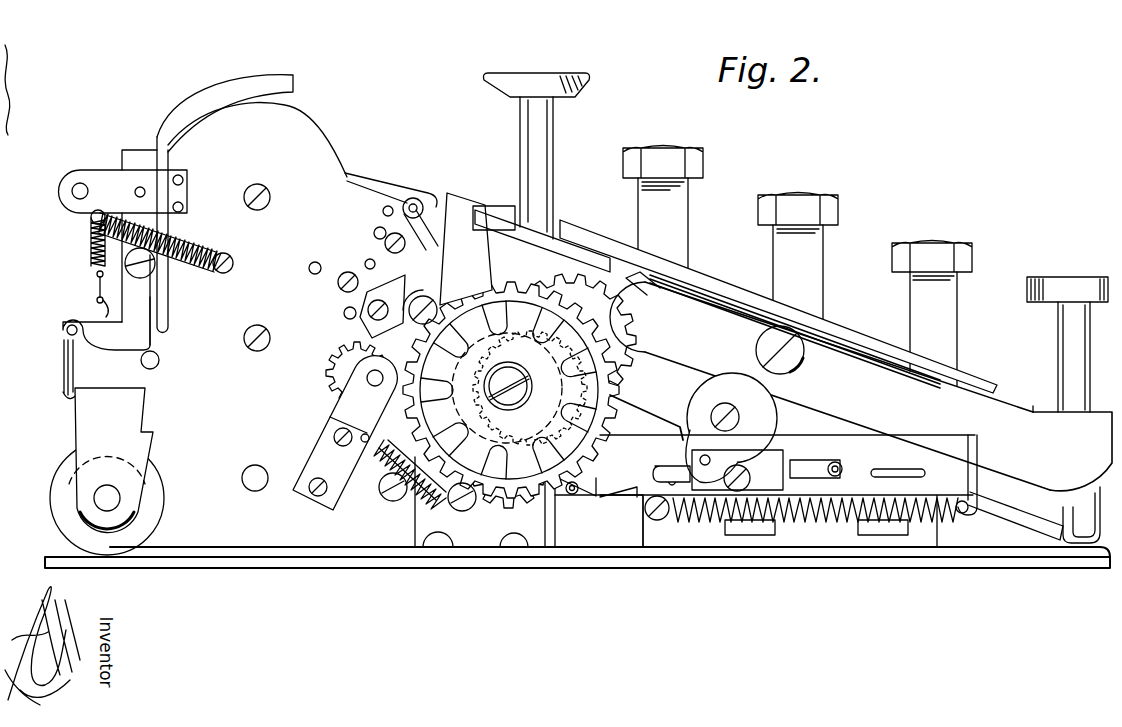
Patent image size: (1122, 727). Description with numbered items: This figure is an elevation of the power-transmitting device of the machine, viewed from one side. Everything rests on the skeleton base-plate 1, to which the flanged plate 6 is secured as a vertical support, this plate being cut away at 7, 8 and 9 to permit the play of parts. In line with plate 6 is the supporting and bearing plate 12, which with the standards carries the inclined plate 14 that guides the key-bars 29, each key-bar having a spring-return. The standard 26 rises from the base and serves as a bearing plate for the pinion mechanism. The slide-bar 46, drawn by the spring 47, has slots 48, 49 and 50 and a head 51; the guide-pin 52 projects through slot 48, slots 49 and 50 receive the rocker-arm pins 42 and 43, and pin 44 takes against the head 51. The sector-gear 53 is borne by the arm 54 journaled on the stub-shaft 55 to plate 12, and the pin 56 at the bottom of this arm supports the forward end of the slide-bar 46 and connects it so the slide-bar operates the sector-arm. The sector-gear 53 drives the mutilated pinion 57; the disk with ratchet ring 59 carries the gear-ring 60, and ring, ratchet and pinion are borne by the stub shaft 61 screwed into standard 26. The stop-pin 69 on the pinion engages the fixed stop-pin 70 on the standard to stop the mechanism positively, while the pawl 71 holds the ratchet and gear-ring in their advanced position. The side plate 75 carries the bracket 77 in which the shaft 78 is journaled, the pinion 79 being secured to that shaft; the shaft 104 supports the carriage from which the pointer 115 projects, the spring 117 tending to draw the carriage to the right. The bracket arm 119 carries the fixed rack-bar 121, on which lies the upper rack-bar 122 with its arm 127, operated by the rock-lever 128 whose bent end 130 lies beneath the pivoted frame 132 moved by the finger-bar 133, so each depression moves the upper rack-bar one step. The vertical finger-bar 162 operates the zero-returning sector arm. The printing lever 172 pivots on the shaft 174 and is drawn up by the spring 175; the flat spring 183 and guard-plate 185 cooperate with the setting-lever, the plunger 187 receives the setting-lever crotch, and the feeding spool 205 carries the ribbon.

The base-plate 1 is at (464, 562).
The flanged plate 6 is at (833, 537).
The cut-away portion of plate 7 is at (876, 535).
The cut-away portion of plate 8 is at (740, 538).
The cut-away portion of plate 9 is at (640, 543).
The supporting and bearing plate 12 is at (830, 386).
The inclined plate 14 is at (858, 331).
The standard 26 is at (493, 527).
The key-bars 29 is at (797, 266).
The pin 42 is at (843, 470).
The pin 43 is at (669, 463).
The pin 44 is at (579, 488).
The slide-bar 46 is at (842, 440).
The spring 47 is at (795, 520).
The slot 48 is at (907, 472).
The slot 49 is at (800, 460).
The slot 50 is at (654, 470).
The head of slide-bar 51 is at (577, 505).
The guide-pin 52 is at (928, 474).
The sector-gear 53 is at (633, 303).
The sector-arm 54 is at (646, 409).
The stub-shaft 55 is at (723, 406).
The pin 56 is at (710, 448).
The mutilated pinion 57 is at (509, 390).
The ratchet ring 59 is at (570, 329).
The gear-ring 60 is at (611, 377).
The stub shaft 61 is at (512, 407).
The stop-pin 69 is at (508, 477).
The fixed stop-pin 70 is at (530, 390).
The pawl 71 is at (429, 505).
The side plate 75 is at (262, 548).
The bracket 77 is at (323, 437).
The shaft 78 is at (368, 379).
The pinion 79 is at (352, 355).
The shaft 104 is at (410, 300).
The pointer 115 is at (372, 180).
The spring 117 is at (417, 196).
The bracket arm 119 is at (447, 258).
The rack-bar 121 is at (544, 240).
The upper rack-bar 122 is at (529, 228).
The arm 127 is at (548, 255).
The rock-lever 128 is at (1018, 515).
The bent end 130 is at (1082, 487).
The pivoted frame 132 is at (1072, 448).
The finger-bar 133 is at (1079, 284).
The vertical finger-bar 162 is at (548, 143).
The printing lever 172 is at (102, 283).
The shaft 174 is at (247, 486).
The spring 175 is at (90, 244).
The flat spring 183 is at (69, 398).
The guard-plate 185 is at (63, 375).
The plunger 187 is at (238, 83).
The feeding spool 205 is at (100, 540).